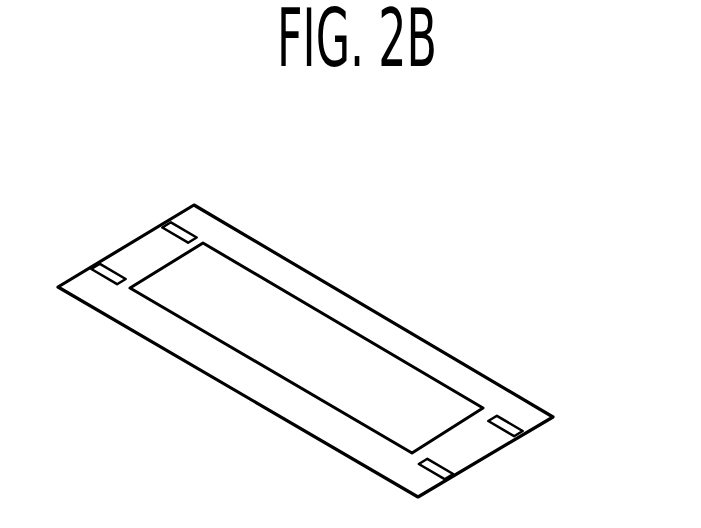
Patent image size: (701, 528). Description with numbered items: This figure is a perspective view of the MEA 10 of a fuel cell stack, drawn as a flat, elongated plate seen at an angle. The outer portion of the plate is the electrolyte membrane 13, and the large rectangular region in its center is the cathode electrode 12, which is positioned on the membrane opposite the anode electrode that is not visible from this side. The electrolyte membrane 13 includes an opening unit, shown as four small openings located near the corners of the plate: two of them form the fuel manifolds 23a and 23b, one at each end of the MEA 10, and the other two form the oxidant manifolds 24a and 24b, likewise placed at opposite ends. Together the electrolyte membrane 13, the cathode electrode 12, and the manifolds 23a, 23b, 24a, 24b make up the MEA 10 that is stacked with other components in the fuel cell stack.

The MEA 10 is at (316, 341).
The cathode electrode 12 is at (383, 372).
The electrolyte membrane 13 is at (319, 351).
The fuel manifold 23a is at (177, 233).
The fuel manifold 23b is at (440, 465).
The oxidant manifold 24a is at (108, 276).
The oxidant manifold 24b is at (505, 422).